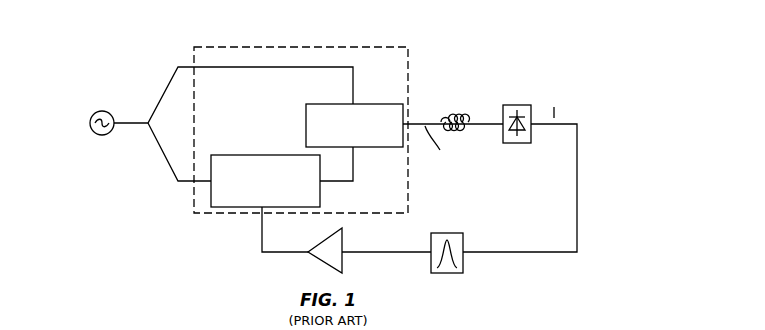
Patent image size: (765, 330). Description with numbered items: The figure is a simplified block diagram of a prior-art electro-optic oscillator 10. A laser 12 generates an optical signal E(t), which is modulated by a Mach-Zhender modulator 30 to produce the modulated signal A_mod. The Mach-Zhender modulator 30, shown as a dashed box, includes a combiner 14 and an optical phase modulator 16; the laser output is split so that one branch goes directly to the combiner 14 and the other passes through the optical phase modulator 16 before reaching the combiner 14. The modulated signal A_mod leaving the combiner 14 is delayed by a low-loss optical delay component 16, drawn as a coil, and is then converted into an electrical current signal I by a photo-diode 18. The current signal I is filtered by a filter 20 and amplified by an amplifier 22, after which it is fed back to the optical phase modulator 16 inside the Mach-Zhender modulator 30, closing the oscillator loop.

The electro-optic oscillator 10 is at (607, 80).
The laser 12 is at (90, 120).
The combiner 14 is at (306, 122).
The optical phase modulator 16 is at (262, 155).
The photo-diode 18 is at (517, 105).
The filter 20 is at (447, 233).
The amplifier 22 is at (322, 243).
The Mach-Zhender modulator 30 is at (297, 47).